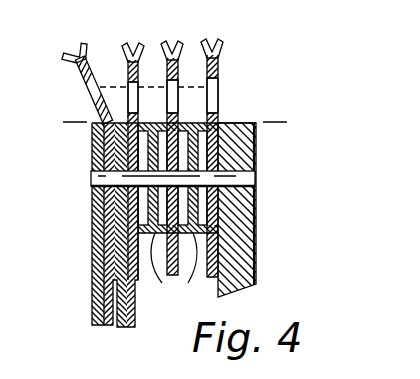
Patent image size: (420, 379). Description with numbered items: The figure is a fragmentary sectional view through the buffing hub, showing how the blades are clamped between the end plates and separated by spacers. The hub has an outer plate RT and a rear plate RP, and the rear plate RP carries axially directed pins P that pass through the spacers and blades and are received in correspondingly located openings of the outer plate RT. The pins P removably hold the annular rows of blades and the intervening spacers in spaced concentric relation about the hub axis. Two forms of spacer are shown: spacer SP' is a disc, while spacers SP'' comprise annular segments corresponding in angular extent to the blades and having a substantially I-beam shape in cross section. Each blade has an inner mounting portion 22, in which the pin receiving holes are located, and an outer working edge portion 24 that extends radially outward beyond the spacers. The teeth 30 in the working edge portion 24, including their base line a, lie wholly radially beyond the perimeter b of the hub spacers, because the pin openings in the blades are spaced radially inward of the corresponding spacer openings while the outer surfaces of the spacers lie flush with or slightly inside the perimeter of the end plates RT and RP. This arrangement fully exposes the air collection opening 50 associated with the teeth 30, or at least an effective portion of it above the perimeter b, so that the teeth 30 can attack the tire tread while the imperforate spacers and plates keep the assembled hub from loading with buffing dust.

The inner mounting portion 22 is at (100, 217).
The outer working edge portion 24 is at (82, 78).
The teeth 30 is at (82, 62).
The opening 50 is at (93, 105).
The pins P is at (234, 166).
The rear plate RP is at (258, 232).
The outer plate RT is at (95, 250).
The spacer disc SP' is at (156, 286).
The annular segment spacer SP'' is at (182, 276).
The base line of the teeth a is at (83, 95).
The perimeter of the hub spacers b is at (182, 130).